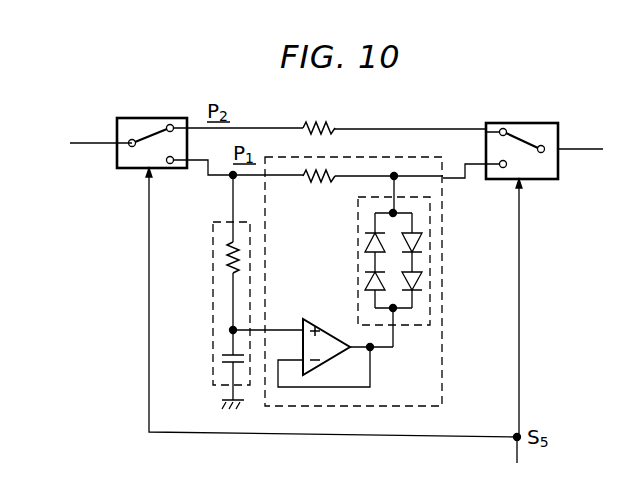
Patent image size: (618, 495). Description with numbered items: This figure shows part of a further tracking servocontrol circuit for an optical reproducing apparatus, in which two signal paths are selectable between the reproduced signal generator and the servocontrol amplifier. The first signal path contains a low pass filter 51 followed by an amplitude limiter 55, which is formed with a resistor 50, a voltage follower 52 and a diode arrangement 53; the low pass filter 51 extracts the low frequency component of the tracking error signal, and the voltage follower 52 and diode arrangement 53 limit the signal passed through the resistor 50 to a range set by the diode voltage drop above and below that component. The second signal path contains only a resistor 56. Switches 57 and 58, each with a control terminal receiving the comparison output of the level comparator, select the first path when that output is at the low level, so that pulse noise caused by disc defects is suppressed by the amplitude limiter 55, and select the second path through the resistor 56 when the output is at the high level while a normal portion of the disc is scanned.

The resistor 50 is at (309, 182).
The low pass filter 51 is at (213, 351).
The voltage follower 52 is at (318, 321).
The diode arrangement 53 is at (416, 325).
The amplitude limiter 55 is at (426, 272).
The resistor 56 is at (303, 124).
The switch 57 is at (117, 130).
The switch 58 is at (558, 133).